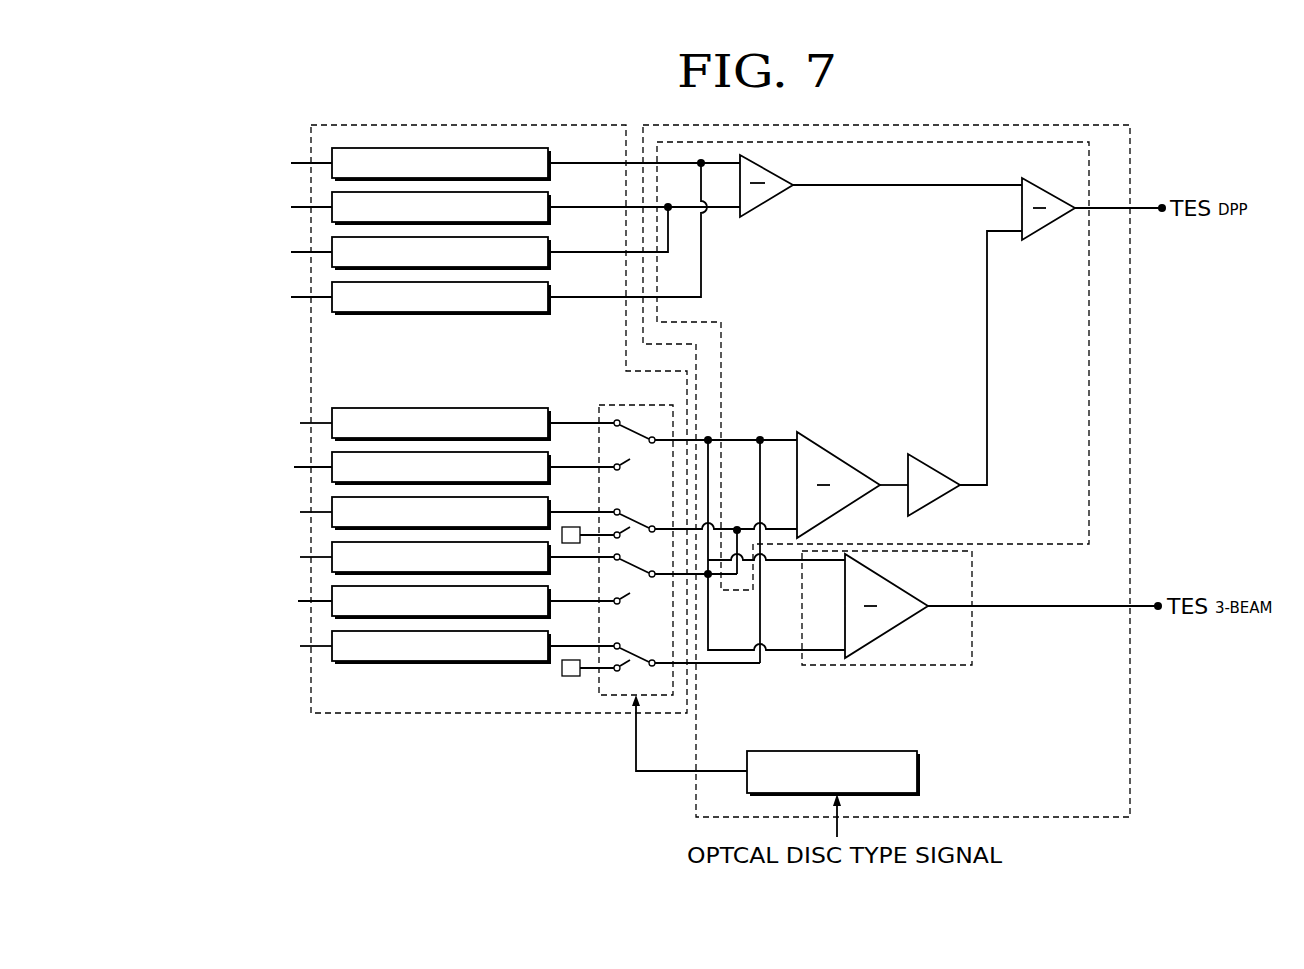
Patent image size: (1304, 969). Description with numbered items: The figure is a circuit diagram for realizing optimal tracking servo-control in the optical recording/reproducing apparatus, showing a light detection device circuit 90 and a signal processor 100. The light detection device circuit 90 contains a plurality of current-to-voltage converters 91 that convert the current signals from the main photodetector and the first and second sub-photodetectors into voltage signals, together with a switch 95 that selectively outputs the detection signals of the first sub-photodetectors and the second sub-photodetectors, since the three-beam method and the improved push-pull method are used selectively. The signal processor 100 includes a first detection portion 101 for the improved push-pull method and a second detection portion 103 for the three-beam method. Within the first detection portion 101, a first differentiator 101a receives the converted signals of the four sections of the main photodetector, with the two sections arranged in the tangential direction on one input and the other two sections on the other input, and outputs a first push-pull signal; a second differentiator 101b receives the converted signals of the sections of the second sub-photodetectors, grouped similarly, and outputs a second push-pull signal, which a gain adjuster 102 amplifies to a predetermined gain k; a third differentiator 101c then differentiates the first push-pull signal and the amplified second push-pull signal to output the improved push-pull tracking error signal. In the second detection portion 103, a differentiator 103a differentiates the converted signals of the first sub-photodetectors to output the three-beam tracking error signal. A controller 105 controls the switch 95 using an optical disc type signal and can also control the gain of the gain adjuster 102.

The light detection device circuit 90 is at (337, 713).
The current-to-voltage (I/V) converter 91 is at (383, 148).
The switch 95 is at (615, 697).
The signal processor 100 is at (1128, 760).
The first detection portion 101 is at (1089, 174).
The first differentiator 101a is at (773, 200).
The second differentiator 101b is at (827, 450).
The third differentiator 101c is at (1045, 225).
The gain adjuster 102 is at (918, 456).
The second detection portion 103 is at (806, 665).
The differentiator 103a is at (903, 622).
The controller 105 is at (917, 768).